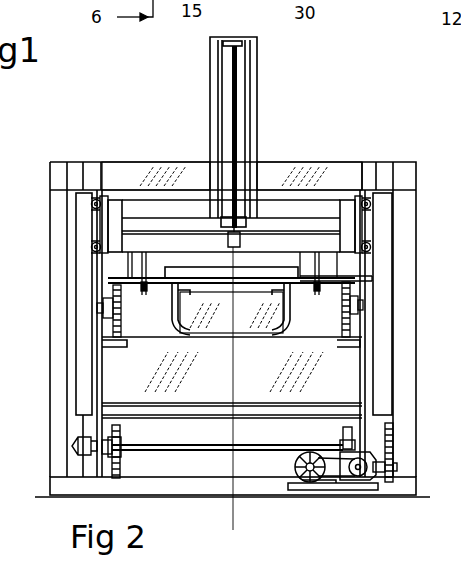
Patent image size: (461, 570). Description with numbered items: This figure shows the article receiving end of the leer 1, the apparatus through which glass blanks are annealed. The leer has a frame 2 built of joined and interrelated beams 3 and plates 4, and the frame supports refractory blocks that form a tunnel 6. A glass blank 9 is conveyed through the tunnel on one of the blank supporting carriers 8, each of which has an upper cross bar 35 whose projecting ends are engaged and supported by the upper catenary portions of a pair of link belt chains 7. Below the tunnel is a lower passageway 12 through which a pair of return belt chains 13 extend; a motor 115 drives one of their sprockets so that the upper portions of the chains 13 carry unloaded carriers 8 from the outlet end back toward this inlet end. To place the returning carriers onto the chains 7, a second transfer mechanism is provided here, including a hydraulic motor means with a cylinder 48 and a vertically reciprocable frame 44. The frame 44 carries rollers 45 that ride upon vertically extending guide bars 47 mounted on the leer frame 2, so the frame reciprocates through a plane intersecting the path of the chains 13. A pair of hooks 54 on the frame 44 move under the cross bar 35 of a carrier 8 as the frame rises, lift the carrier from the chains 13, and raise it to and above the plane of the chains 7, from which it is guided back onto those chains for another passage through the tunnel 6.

The leer 1 is at (144, 172).
The frame 2 is at (338, 178).
The beams 3 is at (92, 428).
The plates 4 is at (237, 128).
The tunnel 6 is at (202, 266).
The link belt chains 7 is at (118, 338).
The blank supporting carriers 8 is at (348, 277).
The glass blank 9 is at (247, 318).
The lower passageway 12 is at (207, 463).
The return belt chains 13 is at (122, 468).
The upper cross bar 35 is at (279, 277).
The vertically reciprocable frame 44 is at (112, 219).
The rollers 45 is at (93, 247).
The guide bars 47 is at (87, 360).
The cylinder 48 is at (233, 98).
The hooks 54 is at (145, 286).
The motor 115 is at (358, 470).